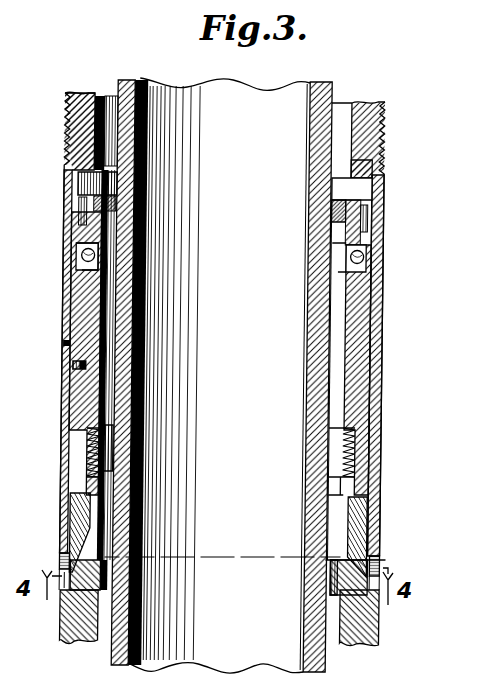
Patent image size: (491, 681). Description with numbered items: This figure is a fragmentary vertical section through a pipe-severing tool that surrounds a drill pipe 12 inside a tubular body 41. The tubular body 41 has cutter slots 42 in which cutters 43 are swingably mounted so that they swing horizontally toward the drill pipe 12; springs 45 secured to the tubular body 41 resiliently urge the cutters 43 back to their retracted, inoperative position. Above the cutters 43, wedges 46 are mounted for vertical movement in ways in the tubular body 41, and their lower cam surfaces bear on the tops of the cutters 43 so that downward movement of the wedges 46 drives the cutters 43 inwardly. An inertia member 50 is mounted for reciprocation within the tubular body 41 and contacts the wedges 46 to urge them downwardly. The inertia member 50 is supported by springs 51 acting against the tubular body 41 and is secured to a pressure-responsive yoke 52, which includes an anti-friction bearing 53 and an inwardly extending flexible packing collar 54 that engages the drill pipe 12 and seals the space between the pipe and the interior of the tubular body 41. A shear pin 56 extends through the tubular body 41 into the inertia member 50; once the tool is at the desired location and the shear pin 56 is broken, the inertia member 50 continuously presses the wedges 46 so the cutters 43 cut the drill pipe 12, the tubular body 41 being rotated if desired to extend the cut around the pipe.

The drill pipe 12 is at (124, 80).
The tubular body 41 is at (382, 392).
The cutter slots 42 is at (63, 558).
The cutters 43 is at (90, 578).
The springs 45 is at (335, 580).
The wedges 46 is at (78, 512).
The inertia member 50 is at (358, 332).
The springs 51 is at (86, 446).
The pressure-responsive yoke 52 is at (382, 260).
The anti-friction bearing 53 is at (82, 255).
The flexible packing collar 54 is at (335, 219).
The shear pin 56 is at (64, 344).